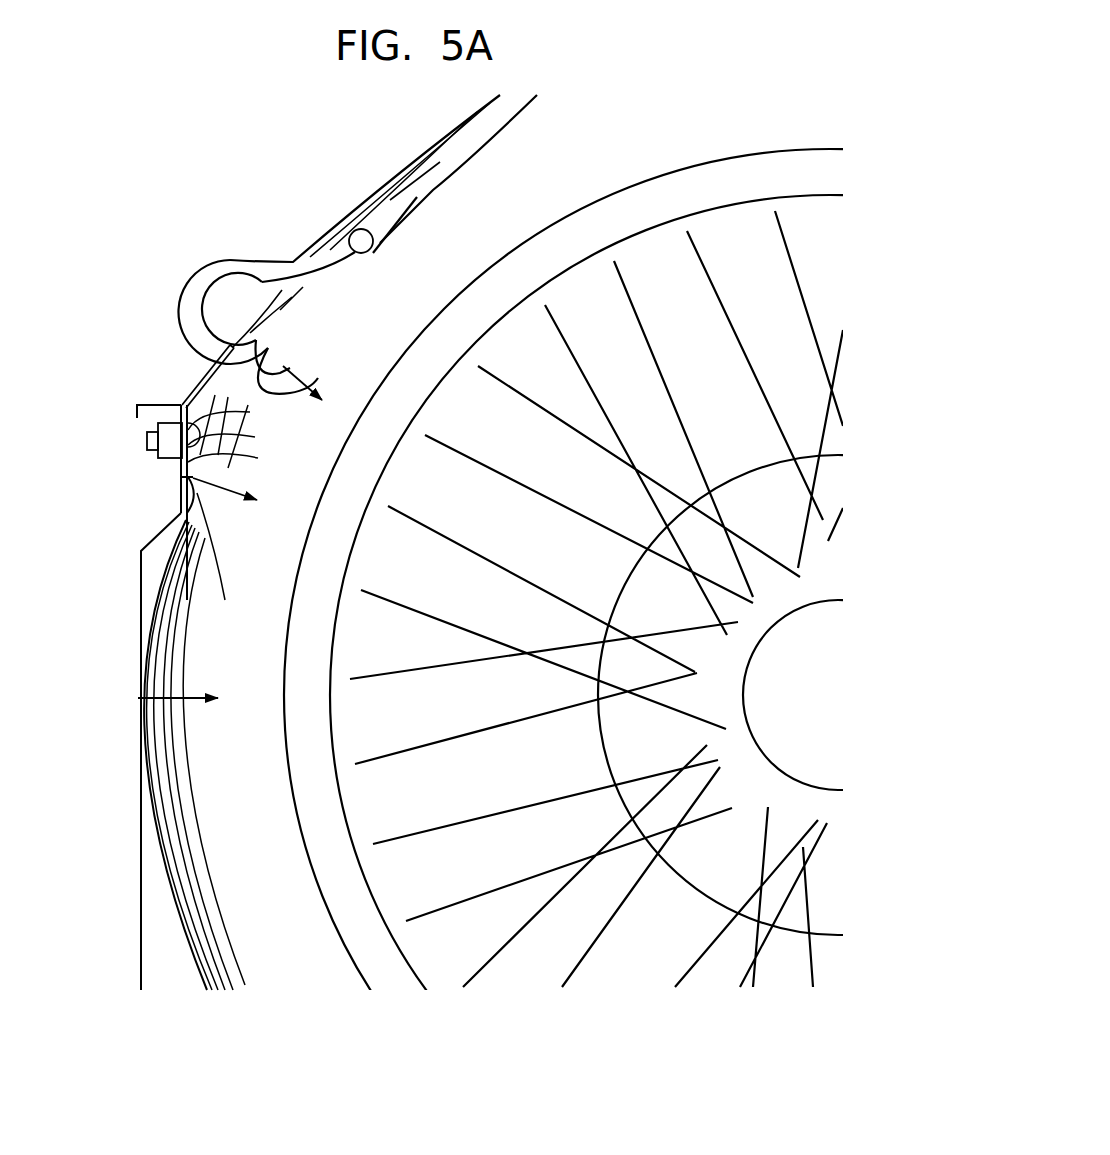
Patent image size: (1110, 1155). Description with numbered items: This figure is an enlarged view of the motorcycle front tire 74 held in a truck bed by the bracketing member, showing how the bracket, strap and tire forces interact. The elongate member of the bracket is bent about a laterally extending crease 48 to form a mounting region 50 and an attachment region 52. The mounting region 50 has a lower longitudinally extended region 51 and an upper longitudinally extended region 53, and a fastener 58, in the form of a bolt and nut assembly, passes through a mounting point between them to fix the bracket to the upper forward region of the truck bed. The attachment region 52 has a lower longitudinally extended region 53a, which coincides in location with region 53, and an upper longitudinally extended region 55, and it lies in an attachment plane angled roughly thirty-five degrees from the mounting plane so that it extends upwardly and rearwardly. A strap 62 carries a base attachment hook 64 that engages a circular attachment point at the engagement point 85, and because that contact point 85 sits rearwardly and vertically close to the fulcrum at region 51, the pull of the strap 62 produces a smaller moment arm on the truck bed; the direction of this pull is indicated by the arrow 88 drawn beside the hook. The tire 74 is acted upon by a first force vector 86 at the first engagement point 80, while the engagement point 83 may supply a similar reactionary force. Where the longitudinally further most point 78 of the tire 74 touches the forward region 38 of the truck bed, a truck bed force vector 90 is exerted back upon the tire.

The forward region 38 is at (141, 940).
The laterally extending crease 48 is at (200, 413).
The mounting region 50 is at (200, 476).
The lower longitudinally extended region 51 is at (181, 472).
The attachment region 52 is at (180, 380).
The upper longitudinally extended region 53 is at (178, 402).
The lower longitudinally extended region 53a is at (190, 443).
The upper longitudinally extended region 55 is at (218, 335).
The fastener 58 is at (200, 460).
The strap 62 is at (482, 142).
The base attachment hook 64 is at (212, 290).
The front tire 74 is at (428, 150).
The longitudinally further most point 78 is at (138, 698).
The first engagement point 80 is at (181, 497).
The engagement point 83 is at (193, 572).
The engagement point 85 is at (192, 367).
The first force vector 86 is at (215, 537).
The pull direction arrow 88 is at (275, 367).
The truck bed force vector 90 is at (180, 700).